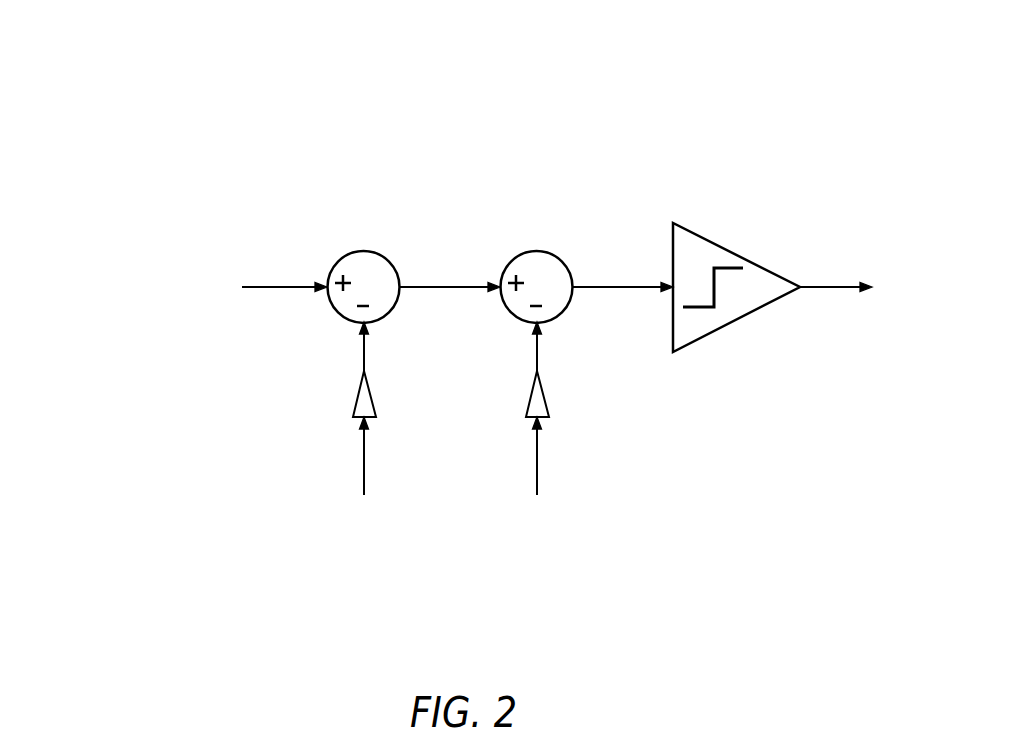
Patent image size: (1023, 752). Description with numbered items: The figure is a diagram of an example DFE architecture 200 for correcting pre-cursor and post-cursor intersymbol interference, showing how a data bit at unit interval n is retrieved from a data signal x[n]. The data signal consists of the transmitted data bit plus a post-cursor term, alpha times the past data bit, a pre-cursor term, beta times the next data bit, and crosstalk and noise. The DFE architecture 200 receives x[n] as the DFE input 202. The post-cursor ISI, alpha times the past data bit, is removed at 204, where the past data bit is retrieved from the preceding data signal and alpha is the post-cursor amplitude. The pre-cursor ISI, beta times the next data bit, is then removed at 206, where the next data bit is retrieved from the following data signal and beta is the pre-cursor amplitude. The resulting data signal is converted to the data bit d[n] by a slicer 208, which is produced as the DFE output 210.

The DFE architecture 200 is at (64, 130).
The DFE input 202 is at (207, 365).
The post-cursor ISI removal 204 is at (366, 252).
The pre-cursor ISI removal 206 is at (539, 252).
The slicer 208 is at (731, 251).
The DFE output 210 is at (907, 366).